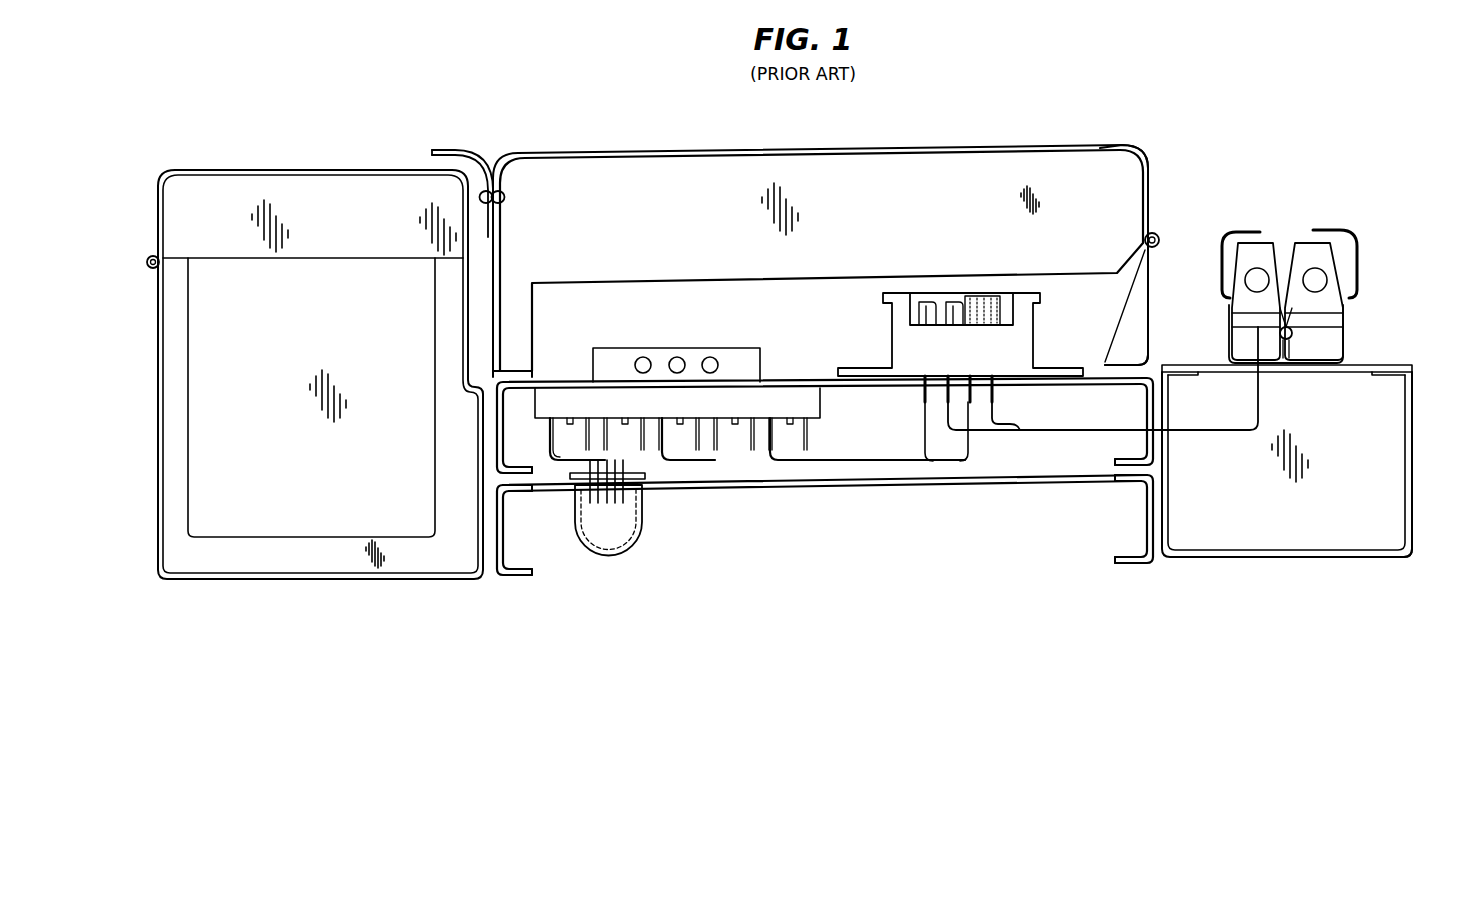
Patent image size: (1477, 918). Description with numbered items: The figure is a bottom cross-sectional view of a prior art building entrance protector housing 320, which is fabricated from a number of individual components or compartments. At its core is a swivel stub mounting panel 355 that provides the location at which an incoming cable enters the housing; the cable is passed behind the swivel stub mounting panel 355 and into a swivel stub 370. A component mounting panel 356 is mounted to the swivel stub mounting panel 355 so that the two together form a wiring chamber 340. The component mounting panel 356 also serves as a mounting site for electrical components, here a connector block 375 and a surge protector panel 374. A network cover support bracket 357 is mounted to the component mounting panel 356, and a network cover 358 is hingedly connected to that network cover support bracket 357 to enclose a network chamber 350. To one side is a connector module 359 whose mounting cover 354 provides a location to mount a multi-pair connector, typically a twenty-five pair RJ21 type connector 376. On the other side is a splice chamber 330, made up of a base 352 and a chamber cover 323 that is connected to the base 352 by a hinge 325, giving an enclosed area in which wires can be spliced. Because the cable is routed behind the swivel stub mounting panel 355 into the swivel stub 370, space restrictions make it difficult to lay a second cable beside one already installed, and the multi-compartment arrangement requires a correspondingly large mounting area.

The BEP housing 320 is at (718, 135).
The chamber cover 323 is at (272, 170).
The hinge 325 is at (150, 255).
The splice chamber 330 is at (212, 447).
The wiring chamber 340 is at (793, 478).
The network chamber 350 is at (868, 163).
The base 352 is at (265, 580).
The mounting cover 354 is at (1360, 365).
The swivel stub mounting panel 355 is at (900, 478).
The component mounting panel 356 is at (1148, 370).
The network cover support bracket 357 is at (1155, 262).
The network cover 358 is at (1108, 146).
The connector module 359 is at (1413, 452).
The swivel stub 370 is at (634, 544).
The surge protector panel 374 is at (695, 348).
The connector block 375 is at (897, 293).
The RJ21 type connector 376 is at (1328, 230).